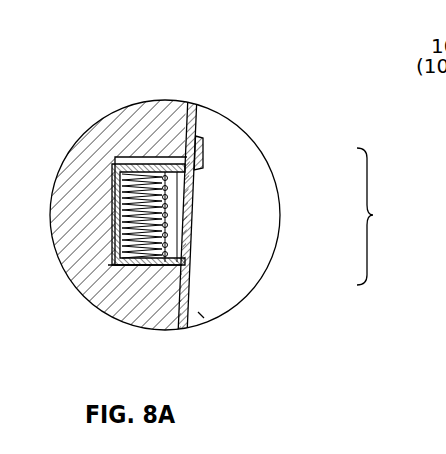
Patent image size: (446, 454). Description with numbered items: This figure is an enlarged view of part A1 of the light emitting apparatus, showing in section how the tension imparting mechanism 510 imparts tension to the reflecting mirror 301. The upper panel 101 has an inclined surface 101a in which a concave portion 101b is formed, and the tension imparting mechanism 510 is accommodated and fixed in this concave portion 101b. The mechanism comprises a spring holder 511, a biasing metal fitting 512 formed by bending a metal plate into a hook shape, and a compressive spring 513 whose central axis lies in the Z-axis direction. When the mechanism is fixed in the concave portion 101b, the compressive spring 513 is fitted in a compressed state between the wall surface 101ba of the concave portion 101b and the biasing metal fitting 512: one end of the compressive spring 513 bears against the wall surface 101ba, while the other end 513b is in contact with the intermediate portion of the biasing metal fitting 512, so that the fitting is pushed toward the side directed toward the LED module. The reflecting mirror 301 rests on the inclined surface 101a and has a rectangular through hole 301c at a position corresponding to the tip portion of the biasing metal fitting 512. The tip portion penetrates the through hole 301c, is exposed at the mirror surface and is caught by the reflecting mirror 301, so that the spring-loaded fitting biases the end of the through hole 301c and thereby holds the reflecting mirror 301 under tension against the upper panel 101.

The part A1 is at (162, 100).
The upper panel 101 is at (190, 124).
The inclined surface 101a is at (207, 318).
The concave portion 101b is at (136, 158).
The wall surface 101ba is at (108, 266).
The reflecting mirror 301 is at (188, 286).
The through hole 301c is at (201, 150).
The tension imparting mechanism 510 is at (383, 216).
The spring holder 511 is at (166, 228).
The biasing metal fitting 512 is at (201, 150).
The compressive spring 513 is at (170, 253).
The other end 513b is at (167, 181).